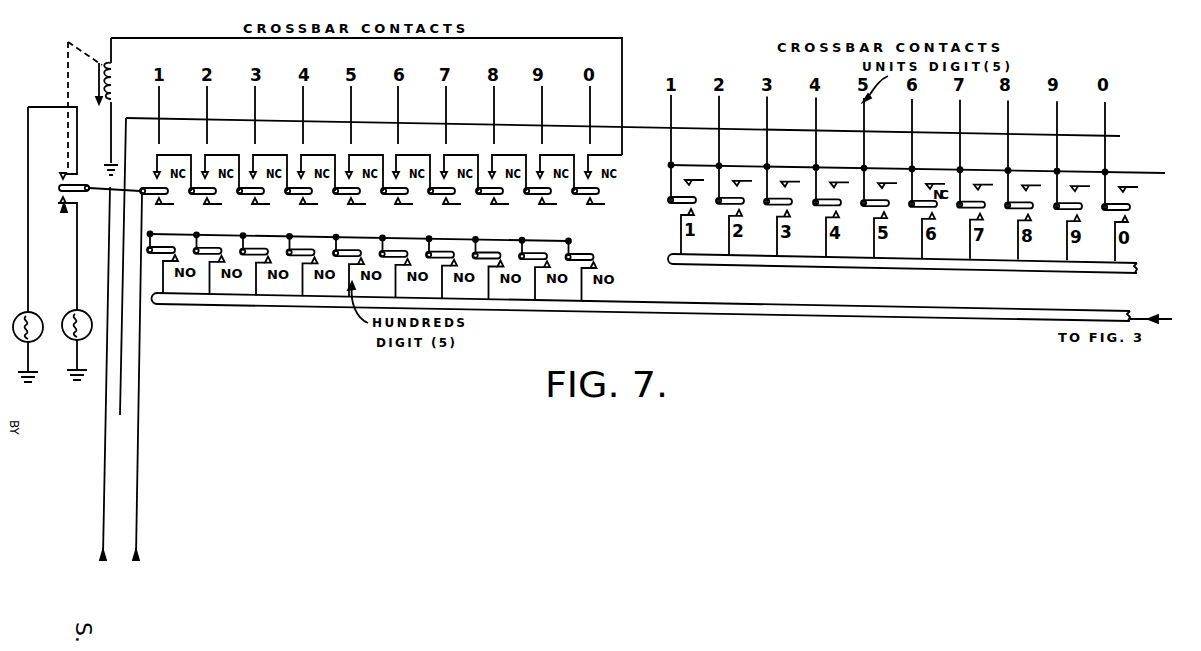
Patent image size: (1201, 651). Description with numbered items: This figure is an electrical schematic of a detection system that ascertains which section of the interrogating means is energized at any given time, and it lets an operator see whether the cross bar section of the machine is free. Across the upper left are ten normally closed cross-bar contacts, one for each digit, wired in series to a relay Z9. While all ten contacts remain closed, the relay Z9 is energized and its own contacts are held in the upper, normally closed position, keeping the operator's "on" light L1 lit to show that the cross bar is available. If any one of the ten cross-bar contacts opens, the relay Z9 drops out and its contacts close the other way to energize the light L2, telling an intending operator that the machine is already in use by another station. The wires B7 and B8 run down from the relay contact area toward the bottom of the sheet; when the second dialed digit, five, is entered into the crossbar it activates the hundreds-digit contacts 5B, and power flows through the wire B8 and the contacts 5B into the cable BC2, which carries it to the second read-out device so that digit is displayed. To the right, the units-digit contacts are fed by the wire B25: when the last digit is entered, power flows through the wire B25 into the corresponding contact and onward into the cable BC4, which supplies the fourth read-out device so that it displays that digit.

The relay Z9 is at (89, 125).
The operator's "on" light L1 is at (31, 244).
The light L2 is at (80, 345).
The wire B7 is at (101, 388).
The wire B8 is at (145, 388).
The contacts 5B is at (359, 253).
The wire B25 is at (916, 167).
The cable BC4 is at (920, 263).
The cable BC2 is at (662, 308).